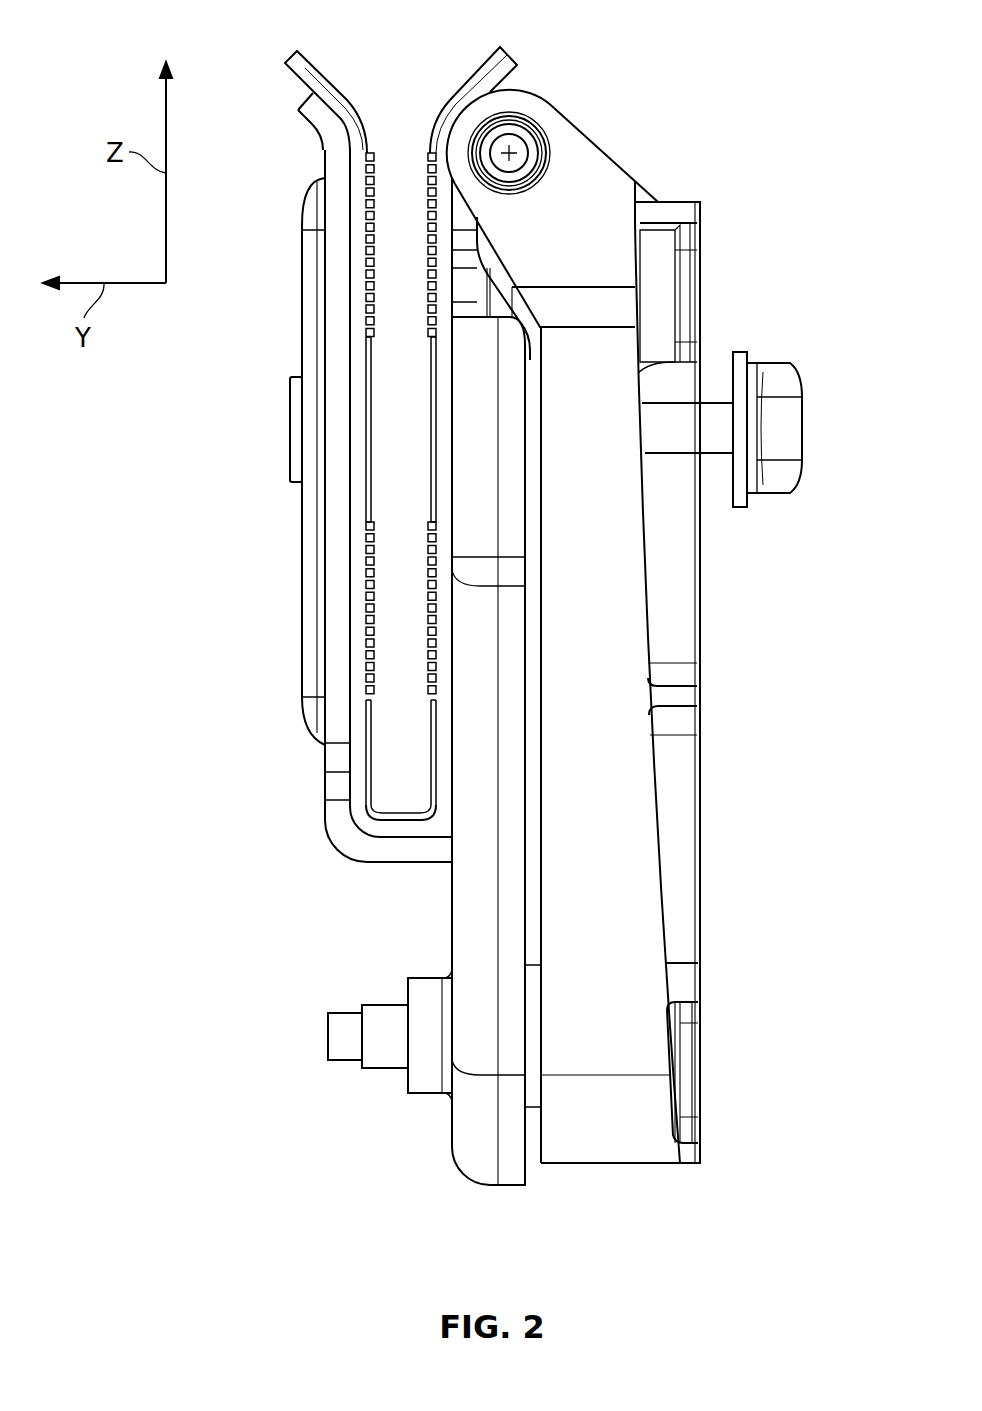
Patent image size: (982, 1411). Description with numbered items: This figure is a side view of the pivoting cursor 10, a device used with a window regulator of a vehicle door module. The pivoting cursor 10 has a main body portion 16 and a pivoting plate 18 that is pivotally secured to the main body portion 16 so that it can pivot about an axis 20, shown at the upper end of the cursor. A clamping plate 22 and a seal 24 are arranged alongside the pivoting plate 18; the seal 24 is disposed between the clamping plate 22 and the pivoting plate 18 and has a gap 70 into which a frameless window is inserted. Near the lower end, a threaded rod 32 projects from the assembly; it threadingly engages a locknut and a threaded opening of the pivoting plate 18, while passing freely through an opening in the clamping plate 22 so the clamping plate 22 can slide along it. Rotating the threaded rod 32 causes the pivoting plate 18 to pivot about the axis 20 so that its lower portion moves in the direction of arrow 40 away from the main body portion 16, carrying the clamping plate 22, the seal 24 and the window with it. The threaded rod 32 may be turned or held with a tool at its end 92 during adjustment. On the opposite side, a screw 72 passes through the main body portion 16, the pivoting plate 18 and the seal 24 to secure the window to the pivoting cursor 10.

The pivoting cursor 10 is at (760, 98).
The main body portion 16 is at (663, 885).
The pivoting plate 18 is at (463, 907).
The axis 20 is at (510, 152).
The clamping plate 22 is at (337, 287).
The seal 24 is at (365, 235).
The threaded rod 32 is at (385, 1055).
The arrow 40 is at (525, 1218).
The gap 70 is at (398, 122).
The screw 72 is at (803, 432).
The end 92 is at (340, 1038).